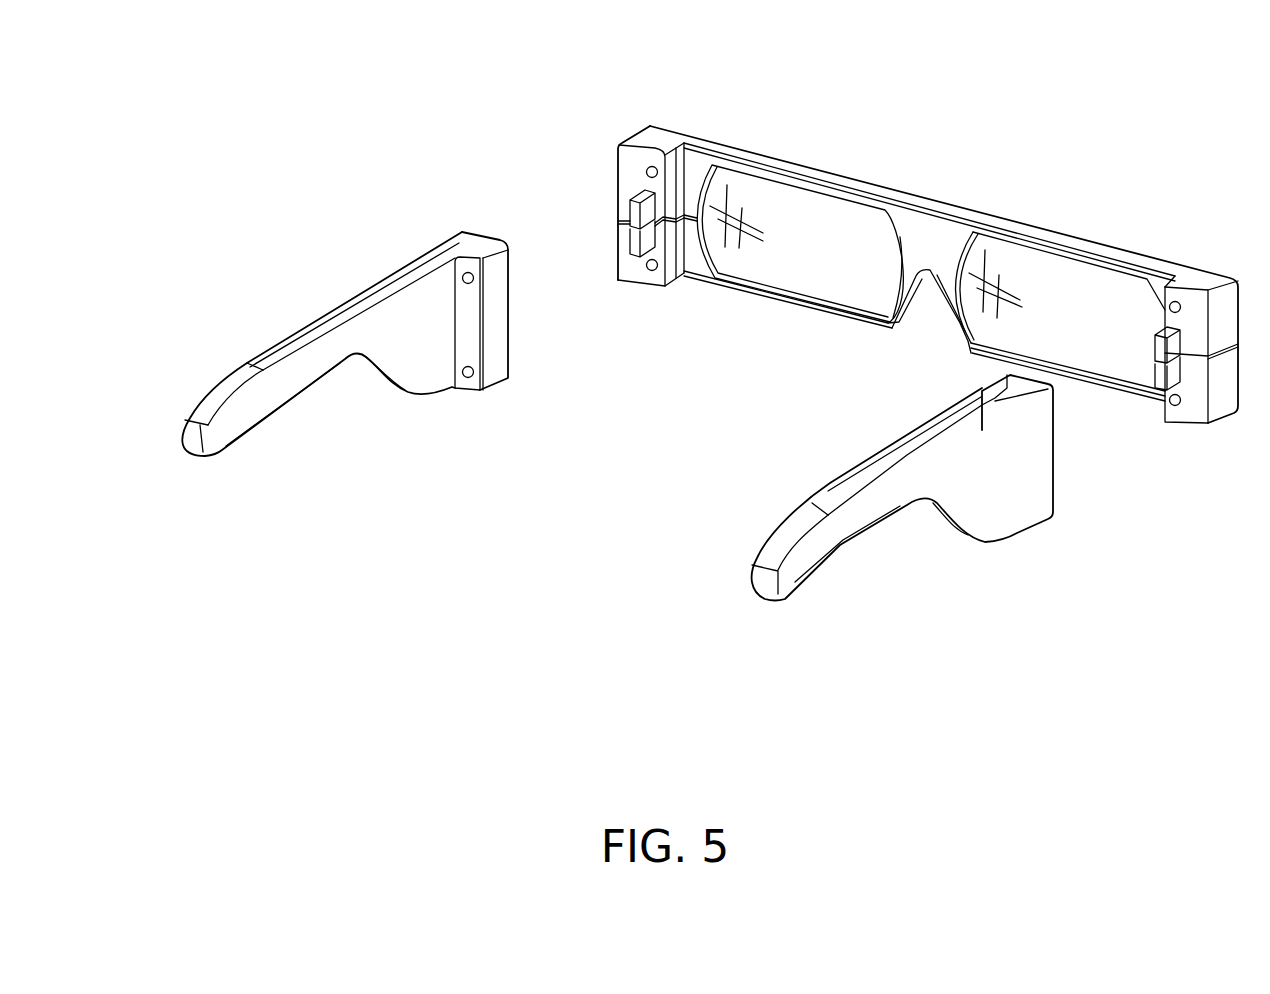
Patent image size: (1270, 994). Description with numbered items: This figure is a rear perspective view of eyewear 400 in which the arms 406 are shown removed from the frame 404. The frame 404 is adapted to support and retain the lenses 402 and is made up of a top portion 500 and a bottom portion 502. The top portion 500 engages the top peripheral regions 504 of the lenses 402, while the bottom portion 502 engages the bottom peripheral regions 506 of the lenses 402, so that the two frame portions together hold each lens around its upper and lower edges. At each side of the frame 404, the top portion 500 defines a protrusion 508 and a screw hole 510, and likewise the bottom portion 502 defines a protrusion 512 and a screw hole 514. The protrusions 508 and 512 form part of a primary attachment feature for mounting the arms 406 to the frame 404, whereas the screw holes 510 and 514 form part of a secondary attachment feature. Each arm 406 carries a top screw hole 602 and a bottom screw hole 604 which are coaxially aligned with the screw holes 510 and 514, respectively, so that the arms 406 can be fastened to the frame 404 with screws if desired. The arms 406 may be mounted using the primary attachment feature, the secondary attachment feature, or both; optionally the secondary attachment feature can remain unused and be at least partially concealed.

The eyewear 400 is at (345, 108).
The lenses 402 is at (868, 302).
The frame 404 is at (912, 222).
The arms 406 is at (277, 372).
The top portion 500 is at (877, 188).
The bottom portion 502 is at (818, 309).
The top peripheral regions 504 is at (824, 201).
The bottom peripheral regions 506 is at (760, 287).
The protrusion 508 is at (632, 209).
The screw hole 510 is at (646, 174).
The protrusion 512 is at (632, 244).
The screw hole 514 is at (648, 271).
The top screw hole 602 is at (466, 282).
The bottom screw hole 604 is at (466, 378).